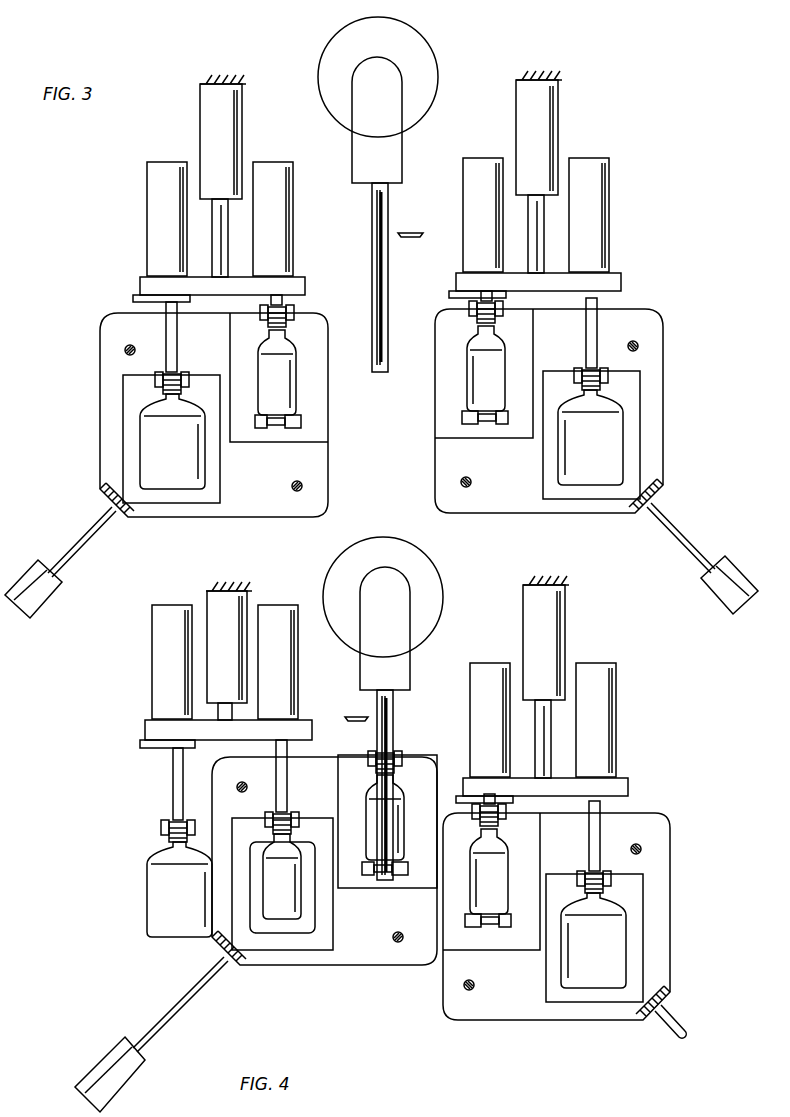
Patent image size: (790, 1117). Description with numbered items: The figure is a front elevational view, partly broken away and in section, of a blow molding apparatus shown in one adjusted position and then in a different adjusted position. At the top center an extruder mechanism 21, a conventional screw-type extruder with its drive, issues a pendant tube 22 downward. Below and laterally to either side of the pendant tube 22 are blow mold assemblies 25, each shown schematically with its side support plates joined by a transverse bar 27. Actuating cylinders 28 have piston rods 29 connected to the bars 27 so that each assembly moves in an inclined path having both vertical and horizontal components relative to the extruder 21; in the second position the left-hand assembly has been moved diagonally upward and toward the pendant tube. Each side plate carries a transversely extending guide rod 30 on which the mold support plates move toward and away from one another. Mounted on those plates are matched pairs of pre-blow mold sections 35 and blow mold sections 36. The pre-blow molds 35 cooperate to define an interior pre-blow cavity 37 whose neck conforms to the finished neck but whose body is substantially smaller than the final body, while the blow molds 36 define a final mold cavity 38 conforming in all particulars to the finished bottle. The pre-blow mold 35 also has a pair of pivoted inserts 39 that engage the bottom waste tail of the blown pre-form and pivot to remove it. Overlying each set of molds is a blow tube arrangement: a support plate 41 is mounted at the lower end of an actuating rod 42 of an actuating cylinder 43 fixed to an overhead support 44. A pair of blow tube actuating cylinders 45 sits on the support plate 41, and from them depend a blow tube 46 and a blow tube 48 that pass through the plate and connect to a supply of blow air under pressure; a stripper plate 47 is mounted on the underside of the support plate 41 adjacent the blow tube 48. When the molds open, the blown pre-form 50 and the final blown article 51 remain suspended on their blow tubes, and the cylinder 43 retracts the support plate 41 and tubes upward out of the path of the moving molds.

In FIG. 3, the extruder mechanism 21 is at (428, 42).
In FIG. 4, the extruder mechanism 21 is at (438, 568).
In FIG. 3, the pendant tube 22 is at (386, 226).
In FIG. 4, the pendant tube 22 is at (392, 728).
In FIG. 3, the blow mold assemblies 25 is at (66, 318).
In FIG. 4, the blow mold assemblies 25 is at (72, 750).
In FIG. 3, the transverse bar 27 is at (118, 518).
In FIG. 4, the transverse bar 27 is at (232, 968).
In FIG. 3, the actuating cylinders 28 is at (48, 600).
In FIG. 4, the actuating cylinders 28 is at (128, 1088).
In FIG. 3, the piston rods 29 is at (76, 546).
In FIG. 4, the piston rods 29 is at (170, 1020).
In FIG. 3, the guide rod 30 is at (125, 351).
In FIG. 4, the guide rod 30 is at (245, 784).
In FIG. 3, the pre-blow mold sections 35 is at (320, 333).
In FIG. 4, the pre-blow mold sections 35 is at (427, 785).
In FIG. 3, the blow mold sections 36 is at (126, 444).
In FIG. 4, the blow mold sections 36 is at (325, 908).
In FIG. 3, the pre-blow cavity 37 is at (296, 384).
In FIG. 4, the pre-blow cavity 37 is at (396, 843).
In FIG. 4, the final mold cavity 38 is at (312, 923).
In FIG. 3, the pivoted inserts 39 is at (462, 423).
In FIG. 3, the support plate 41 is at (303, 278).
In FIG. 4, the support plate 41 is at (150, 722).
In FIG. 3, the actuating rod 42 is at (222, 230).
In FIG. 3, the actuating cylinder 43 is at (232, 113).
In FIG. 4, the actuating cylinder 43 is at (232, 653).
In FIG. 3, the overhead support 44 is at (248, 75).
In FIG. 4, the overhead support 44 is at (247, 589).
In FIG. 3, the blow tube actuating cylinders 45 is at (150, 181).
In FIG. 4, the blow tube actuating cylinders 45 is at (160, 653).
In FIG. 3, the blow tube 46 is at (298, 310).
In FIG. 4, the blow tube 46 is at (288, 780).
In FIG. 3, the stripper plate 47 is at (140, 298).
In FIG. 4, the stripper plate 47 is at (141, 742).
In FIG. 3, the blow tube 48 is at (178, 344).
In FIG. 4, the blow tube 48 is at (173, 781).
In FIG. 3, the blown pre-form 50 is at (282, 378).
In FIG. 4, the blown pre-form 50 is at (287, 880).
In FIG. 3, the final blown article 51 is at (203, 430).
In FIG. 4, the final blown article 51 is at (205, 855).